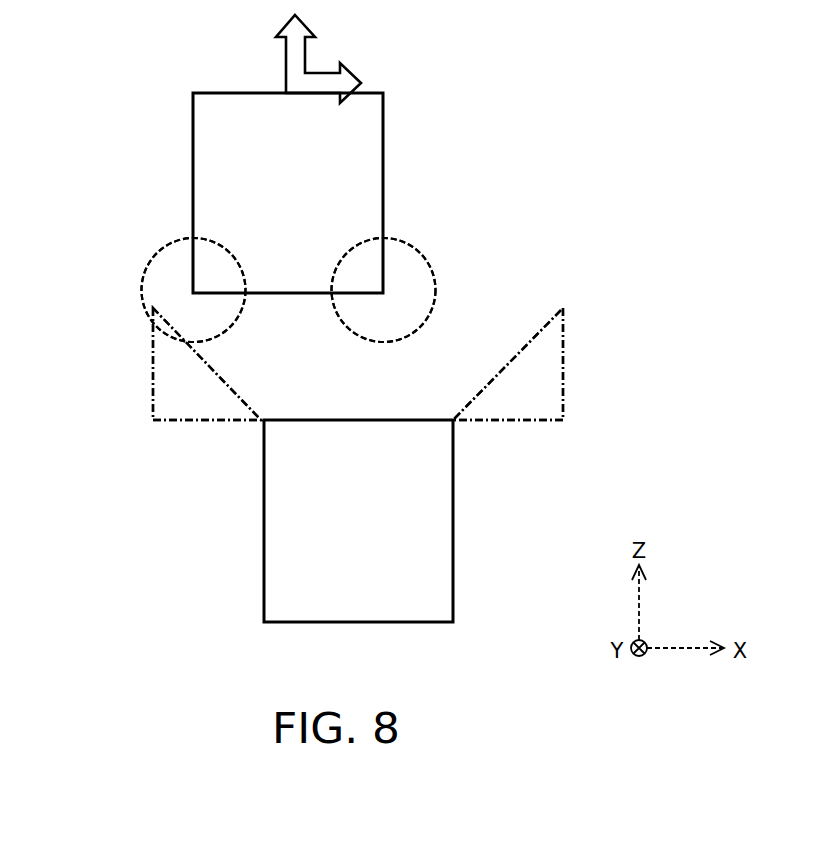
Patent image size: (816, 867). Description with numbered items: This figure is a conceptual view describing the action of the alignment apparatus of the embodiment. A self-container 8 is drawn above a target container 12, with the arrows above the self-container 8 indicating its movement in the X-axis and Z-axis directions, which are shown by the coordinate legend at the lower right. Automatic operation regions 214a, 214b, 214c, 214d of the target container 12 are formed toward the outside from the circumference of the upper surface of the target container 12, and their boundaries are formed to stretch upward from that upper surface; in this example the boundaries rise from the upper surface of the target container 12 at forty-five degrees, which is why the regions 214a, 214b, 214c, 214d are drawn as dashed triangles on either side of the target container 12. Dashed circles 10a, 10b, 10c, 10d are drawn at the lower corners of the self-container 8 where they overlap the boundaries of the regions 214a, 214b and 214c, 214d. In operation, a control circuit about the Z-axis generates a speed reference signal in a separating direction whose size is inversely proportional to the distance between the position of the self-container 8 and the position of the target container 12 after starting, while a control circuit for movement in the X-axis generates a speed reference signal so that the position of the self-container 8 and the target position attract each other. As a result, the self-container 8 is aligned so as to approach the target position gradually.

The self-container 8 is at (362, 149).
The roller 10a is at (434, 267).
The roller 10b is at (384, 290).
The roller 10c is at (143, 267).
The roller 10d is at (194, 290).
The target container 12 is at (348, 598).
The automatic operation region 214a is at (533, 422).
The automatic operation region 214b is at (508, 364).
The automatic operation region 214c is at (178, 422).
The automatic operation region 214d is at (207, 364).